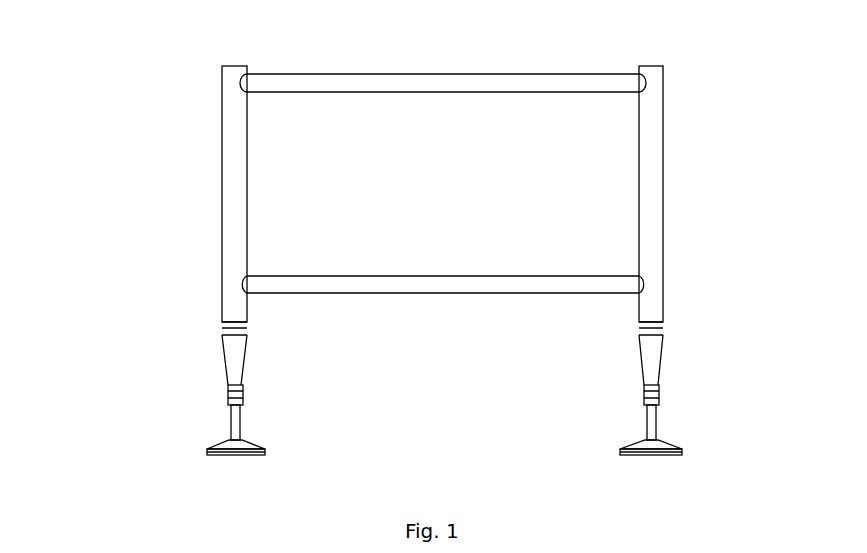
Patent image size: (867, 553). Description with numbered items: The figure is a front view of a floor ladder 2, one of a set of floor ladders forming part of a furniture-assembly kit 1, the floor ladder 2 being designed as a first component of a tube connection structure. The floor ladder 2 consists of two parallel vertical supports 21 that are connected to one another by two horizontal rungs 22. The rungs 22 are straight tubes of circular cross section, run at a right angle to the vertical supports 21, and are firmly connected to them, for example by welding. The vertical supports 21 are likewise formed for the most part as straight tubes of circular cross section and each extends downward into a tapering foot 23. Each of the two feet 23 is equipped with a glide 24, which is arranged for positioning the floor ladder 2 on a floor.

The furniture-assembly kit 1 is at (192, 73).
The floor ladder 2 is at (698, 193).
The vertical support 21 is at (235, 171).
The horizontal rung 22 is at (600, 77).
The tapering foot 23 is at (652, 348).
The glide 24 is at (222, 445).